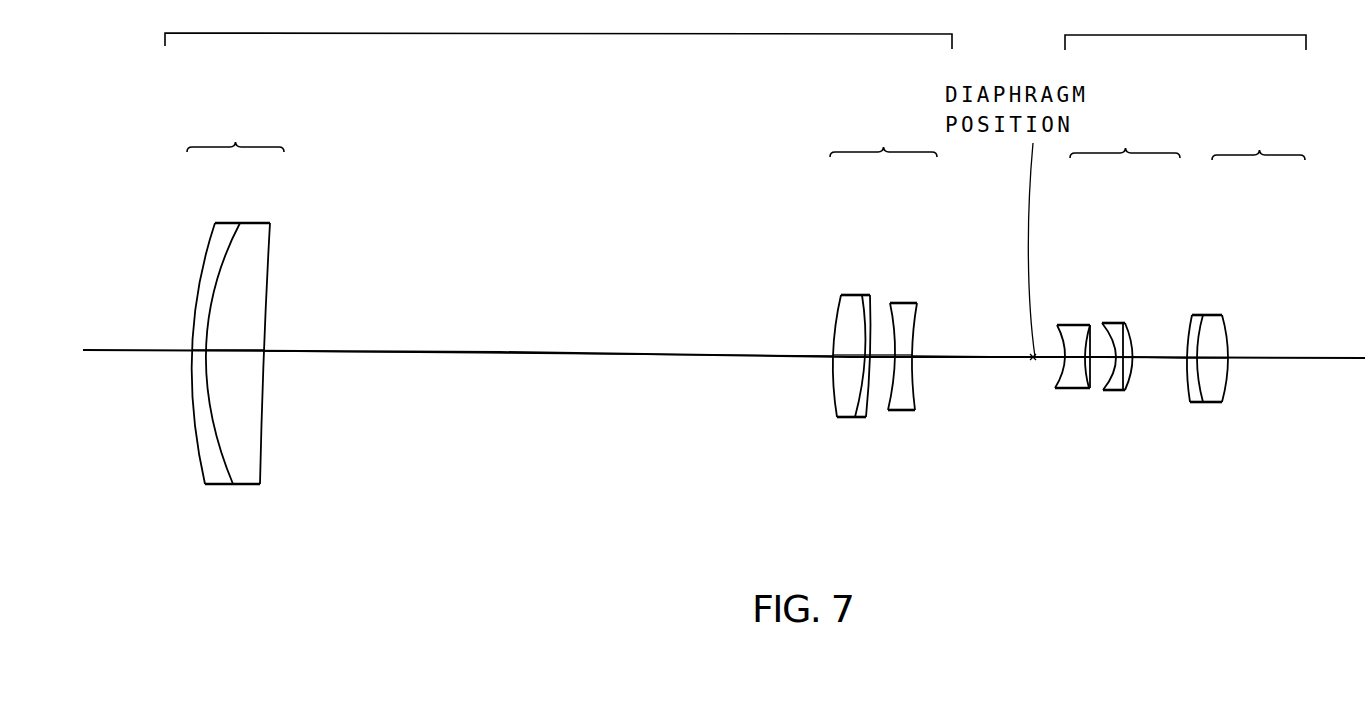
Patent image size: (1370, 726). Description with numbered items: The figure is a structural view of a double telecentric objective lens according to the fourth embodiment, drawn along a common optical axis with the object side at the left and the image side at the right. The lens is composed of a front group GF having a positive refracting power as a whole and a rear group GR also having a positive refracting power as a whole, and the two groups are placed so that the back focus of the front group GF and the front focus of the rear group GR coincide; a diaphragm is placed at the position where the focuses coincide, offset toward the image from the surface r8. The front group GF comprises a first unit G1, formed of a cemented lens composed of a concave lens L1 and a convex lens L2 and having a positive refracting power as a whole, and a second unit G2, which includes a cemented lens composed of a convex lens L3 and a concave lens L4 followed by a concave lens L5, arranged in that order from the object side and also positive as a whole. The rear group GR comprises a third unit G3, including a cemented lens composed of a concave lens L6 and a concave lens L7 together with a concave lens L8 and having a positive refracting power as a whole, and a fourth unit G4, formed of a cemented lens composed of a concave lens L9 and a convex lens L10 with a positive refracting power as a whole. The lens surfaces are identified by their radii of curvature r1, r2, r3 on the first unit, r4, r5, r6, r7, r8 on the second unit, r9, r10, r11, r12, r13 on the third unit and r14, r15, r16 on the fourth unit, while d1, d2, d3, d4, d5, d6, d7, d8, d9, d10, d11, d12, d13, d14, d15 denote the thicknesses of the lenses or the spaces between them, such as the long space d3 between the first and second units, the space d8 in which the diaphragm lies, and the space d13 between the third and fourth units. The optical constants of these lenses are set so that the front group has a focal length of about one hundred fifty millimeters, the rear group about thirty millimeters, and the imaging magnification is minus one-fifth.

The front group GF is at (558, 25).
The rear group GR is at (1185, 27).
The first unit G1 is at (220, 335).
The second unit G2 is at (899, 302).
The third unit G3 is at (1098, 310).
The fourth unit G4 is at (1247, 295).
The concave lens L1 is at (227, 230).
The convex lens L2 is at (260, 232).
The convex lens L3 is at (846, 297).
The concave lens L4 is at (860, 297).
The concave lens L5 is at (903, 312).
The concave lens L6 is at (1070, 326).
The concave lens L7 is at (1103, 323).
The concave lens L8 is at (1128, 323).
The concave lens L9 is at (1202, 315).
The convex lens L10 is at (1220, 315).
The lens thickness d1 is at (192, 350).
The lens thickness d2 is at (235, 338).
The air space d3 is at (548, 340).
The lens thickness d4 is at (845, 356).
The lens thickness d5 is at (863, 352).
The air space d6 is at (888, 352).
The lens thickness d7 is at (904, 355).
The air space d8 is at (918, 356).
The lens thickness d9 is at (1067, 358).
The lens thickness d10 is at (1087, 355).
The air space d11 is at (1105, 357).
The lens thickness d12 is at (1117, 358).
The air space d13 is at (1188, 357).
The lens thickness d14 is at (1197, 357).
The lens thickness d15 is at (1228, 358).
The radius of curvature r1 is at (203, 482).
The radius of curvature r2 is at (232, 484).
The radius of curvature r3 is at (262, 484).
The radius of curvature r4 is at (837, 415).
The radius of curvature r5 is at (856, 418).
The radius of curvature r6 is at (869, 418).
The radius of curvature r7 is at (888, 411).
The radius of curvature r8 is at (915, 411).
The radius of curvature r9 is at (1057, 390).
The radius of curvature r10 is at (1080, 390).
The radius of curvature r11 is at (1091, 393).
The radius of curvature r12 is at (1105, 393).
The radius of curvature r13 is at (1130, 393).
The radius of curvature r14 is at (1192, 402).
The radius of curvature r15 is at (1222, 403).
The radius of curvature r16 is at (1227, 401).